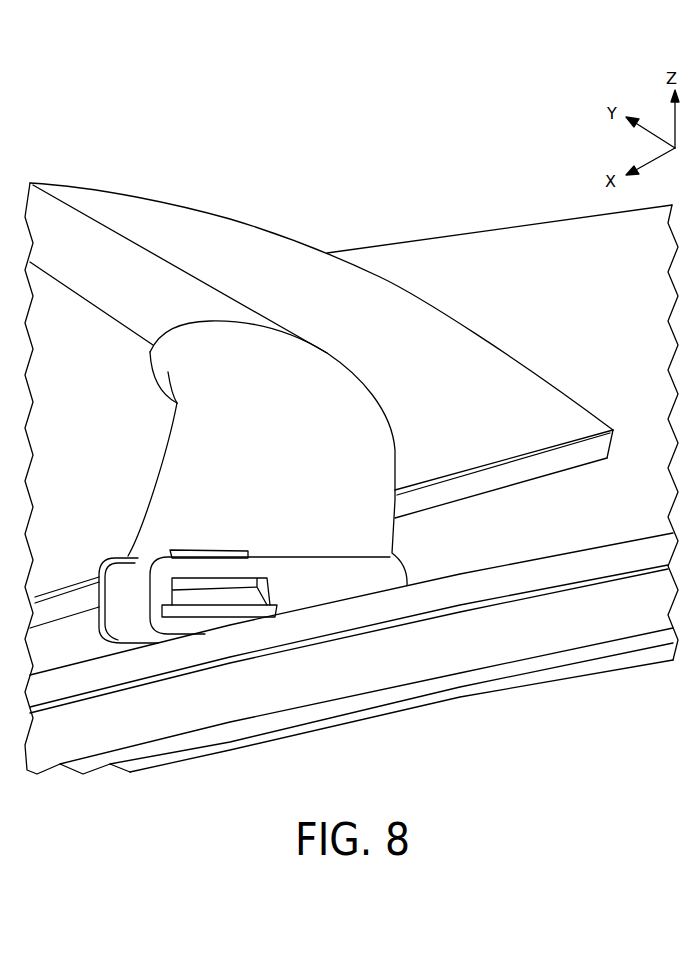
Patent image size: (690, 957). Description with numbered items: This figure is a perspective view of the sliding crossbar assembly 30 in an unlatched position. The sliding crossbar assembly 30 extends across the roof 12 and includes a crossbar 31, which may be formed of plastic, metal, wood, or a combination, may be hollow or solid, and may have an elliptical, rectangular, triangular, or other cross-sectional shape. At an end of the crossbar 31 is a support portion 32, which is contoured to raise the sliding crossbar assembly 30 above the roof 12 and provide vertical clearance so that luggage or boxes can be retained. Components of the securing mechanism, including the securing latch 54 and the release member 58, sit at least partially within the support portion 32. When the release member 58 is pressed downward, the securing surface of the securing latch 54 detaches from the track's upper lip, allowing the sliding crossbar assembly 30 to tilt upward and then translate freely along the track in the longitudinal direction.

The sliding crossbar assembly 30 is at (351, 436).
The roof 12 is at (505, 240).
The crossbar 31 is at (185, 283).
The support portion 32 is at (322, 365).
The securing latch 54 is at (182, 597).
The release member 58 is at (205, 555).